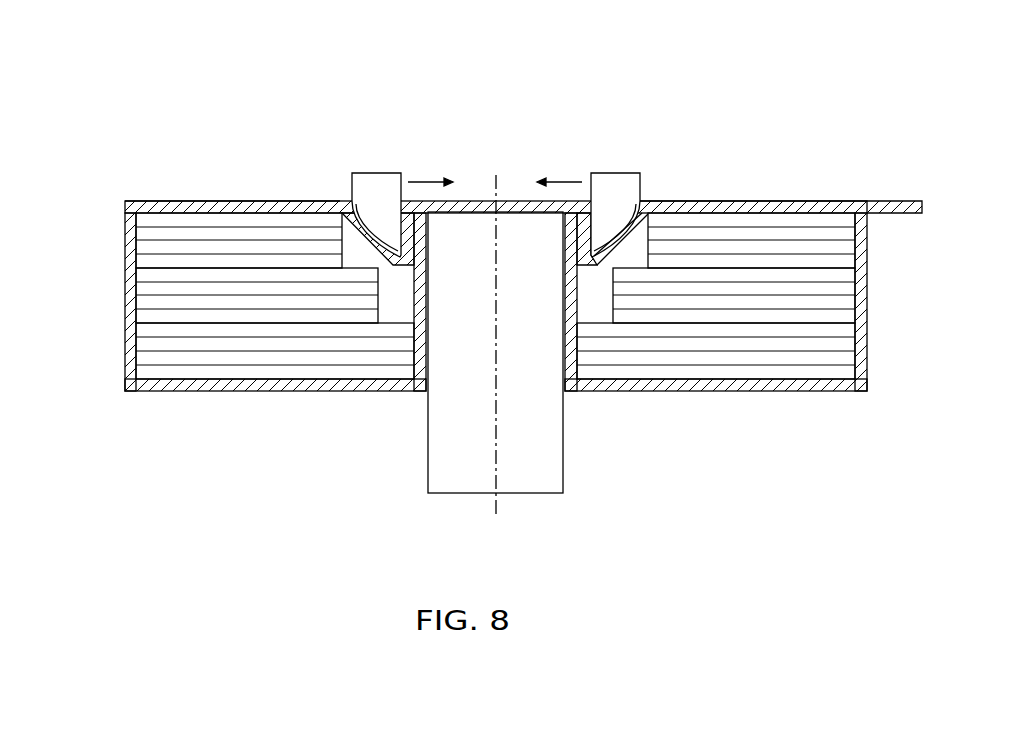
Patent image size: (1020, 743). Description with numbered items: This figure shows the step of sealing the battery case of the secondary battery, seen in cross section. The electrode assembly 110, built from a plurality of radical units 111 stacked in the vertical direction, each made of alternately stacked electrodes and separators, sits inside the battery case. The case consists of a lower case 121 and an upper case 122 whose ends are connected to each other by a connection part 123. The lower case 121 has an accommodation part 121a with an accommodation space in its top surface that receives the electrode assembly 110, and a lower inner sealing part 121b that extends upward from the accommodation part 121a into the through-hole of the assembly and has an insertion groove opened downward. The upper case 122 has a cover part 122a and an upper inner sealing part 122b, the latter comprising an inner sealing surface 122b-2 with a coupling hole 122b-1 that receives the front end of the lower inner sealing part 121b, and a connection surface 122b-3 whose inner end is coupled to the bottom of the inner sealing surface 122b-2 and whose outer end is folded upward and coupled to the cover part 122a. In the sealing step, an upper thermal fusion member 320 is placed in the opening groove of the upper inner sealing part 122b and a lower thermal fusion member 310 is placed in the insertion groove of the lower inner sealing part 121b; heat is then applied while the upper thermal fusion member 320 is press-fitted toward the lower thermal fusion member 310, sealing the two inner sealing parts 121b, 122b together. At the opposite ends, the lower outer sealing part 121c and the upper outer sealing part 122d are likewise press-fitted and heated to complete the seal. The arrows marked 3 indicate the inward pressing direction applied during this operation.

The bending tool 3 is at (642, 178).
The electrode assembly 110 is at (63, 240).
The radical unit 111 is at (125, 215).
The lower case 121 is at (897, 462).
The accommodation part 121a is at (720, 392).
The lower inner sealing part 121b is at (556, 373).
The lower outer sealing part 121c is at (893, 216).
The upper case 122 is at (823, 57).
The cover part 122a is at (257, 205).
The upper inner sealing part 122b is at (450, 105).
The coupling hole 122b-1 is at (571, 206).
The inner sealing surface 122b-2 is at (402, 203).
The connection surface 122b-3 is at (356, 214).
The upper outer sealing part 122d is at (823, 203).
The connection part 123 is at (125, 202).
The lower thermal fusion member 310 is at (528, 493).
The upper thermal fusion member 320 is at (372, 244).